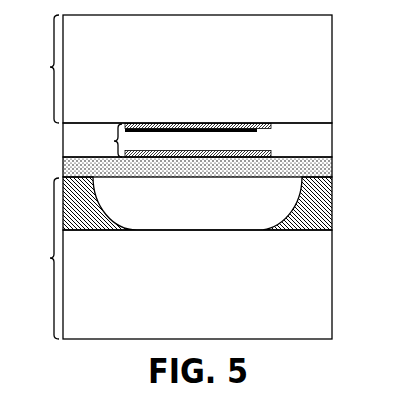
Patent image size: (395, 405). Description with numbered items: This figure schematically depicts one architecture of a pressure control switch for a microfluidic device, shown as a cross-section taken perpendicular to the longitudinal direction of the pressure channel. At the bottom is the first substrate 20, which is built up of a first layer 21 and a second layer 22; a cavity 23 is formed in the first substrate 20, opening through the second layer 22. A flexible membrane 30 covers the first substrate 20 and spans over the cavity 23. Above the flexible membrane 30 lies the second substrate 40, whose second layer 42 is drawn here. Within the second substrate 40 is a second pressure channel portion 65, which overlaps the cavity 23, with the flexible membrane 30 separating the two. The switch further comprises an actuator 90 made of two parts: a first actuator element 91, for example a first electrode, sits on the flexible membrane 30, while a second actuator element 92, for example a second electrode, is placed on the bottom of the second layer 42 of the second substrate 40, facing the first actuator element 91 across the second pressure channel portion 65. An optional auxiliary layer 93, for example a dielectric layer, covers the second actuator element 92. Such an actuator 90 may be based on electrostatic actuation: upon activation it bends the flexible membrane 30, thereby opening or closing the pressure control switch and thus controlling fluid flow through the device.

The first substrate 20 is at (35, 258).
The first layer 21 is at (185, 297).
The second layer 22 is at (323, 203).
The cavity 23 is at (178, 218).
The flexible membrane 30 is at (63, 167).
The second substrate 40 is at (37, 69).
The second layer 42 is at (185, 72).
The second pressure channel portion 65 is at (333, 144).
The actuator 90 is at (197, 140).
The first actuator element 91 is at (180, 152).
The second actuator element 92 is at (173, 123).
The auxiliary layer 93 is at (262, 133).